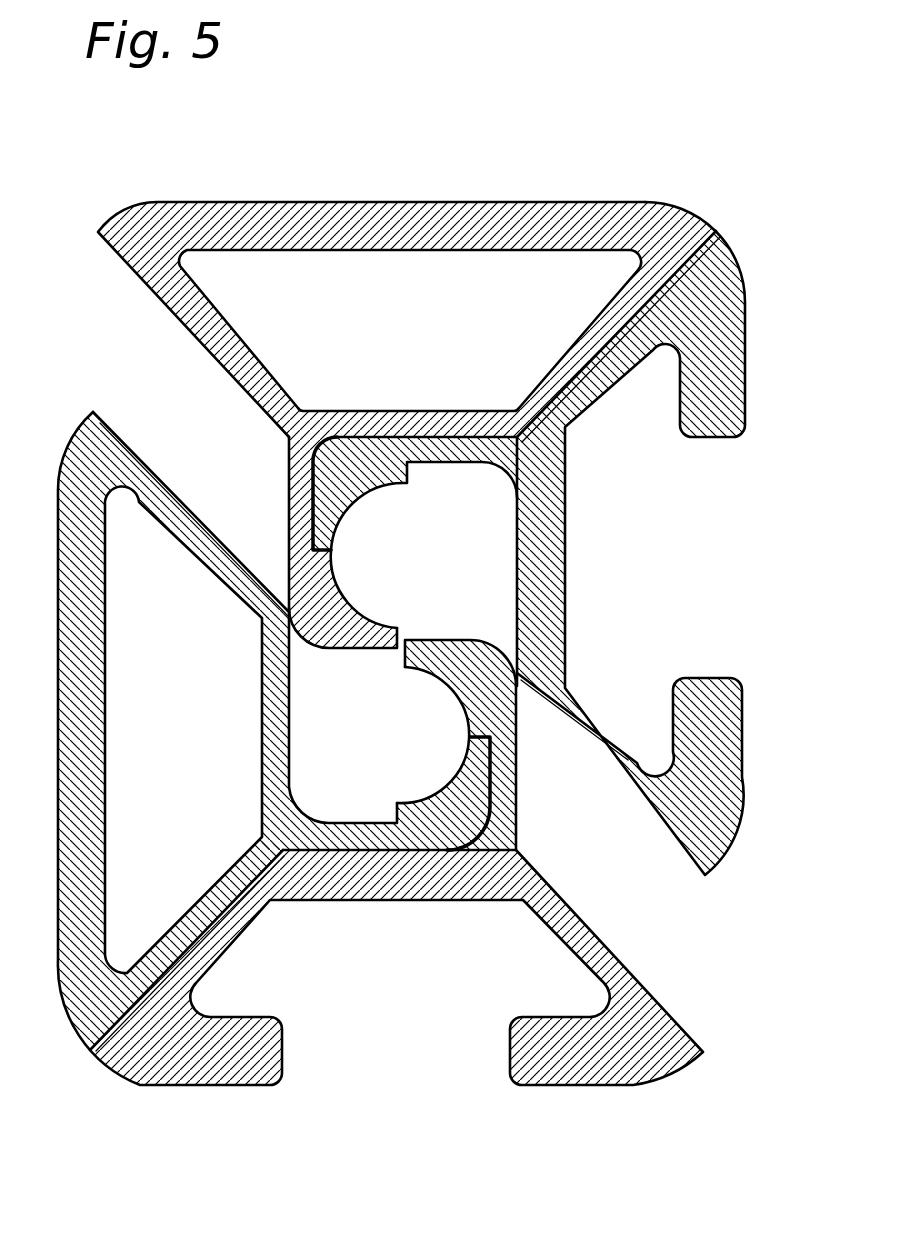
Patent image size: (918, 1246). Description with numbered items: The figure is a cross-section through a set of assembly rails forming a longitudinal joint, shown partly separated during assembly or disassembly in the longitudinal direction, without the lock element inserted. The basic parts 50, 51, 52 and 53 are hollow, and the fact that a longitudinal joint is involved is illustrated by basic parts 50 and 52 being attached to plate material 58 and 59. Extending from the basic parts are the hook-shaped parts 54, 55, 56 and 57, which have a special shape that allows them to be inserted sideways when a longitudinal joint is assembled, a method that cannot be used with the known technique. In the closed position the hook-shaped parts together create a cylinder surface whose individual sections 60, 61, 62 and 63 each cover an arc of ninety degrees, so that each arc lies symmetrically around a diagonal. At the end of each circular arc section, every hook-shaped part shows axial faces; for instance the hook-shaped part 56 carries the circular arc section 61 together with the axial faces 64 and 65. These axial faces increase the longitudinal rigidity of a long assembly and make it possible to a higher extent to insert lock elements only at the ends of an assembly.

The basic part 50 is at (107, 1072).
The basic part 51 is at (740, 310).
The basic part 52 is at (712, 230).
The basic part 53 is at (167, 943).
The hook-shaped part 54 is at (517, 808).
The hook-shaped part 55 is at (405, 470).
The hook-shaped part 56 is at (334, 578).
The hook-shaped part 57 is at (367, 838).
The plate material 58 is at (300, 1100).
The plate material 59 is at (436, 167).
The circular arc section 60 is at (350, 500).
The circular arc section 61 is at (368, 612).
The circular arc section 62 is at (457, 693).
The circular arc section 63 is at (427, 793).
The axial face 64 is at (288, 560).
The axial face 65 is at (407, 634).